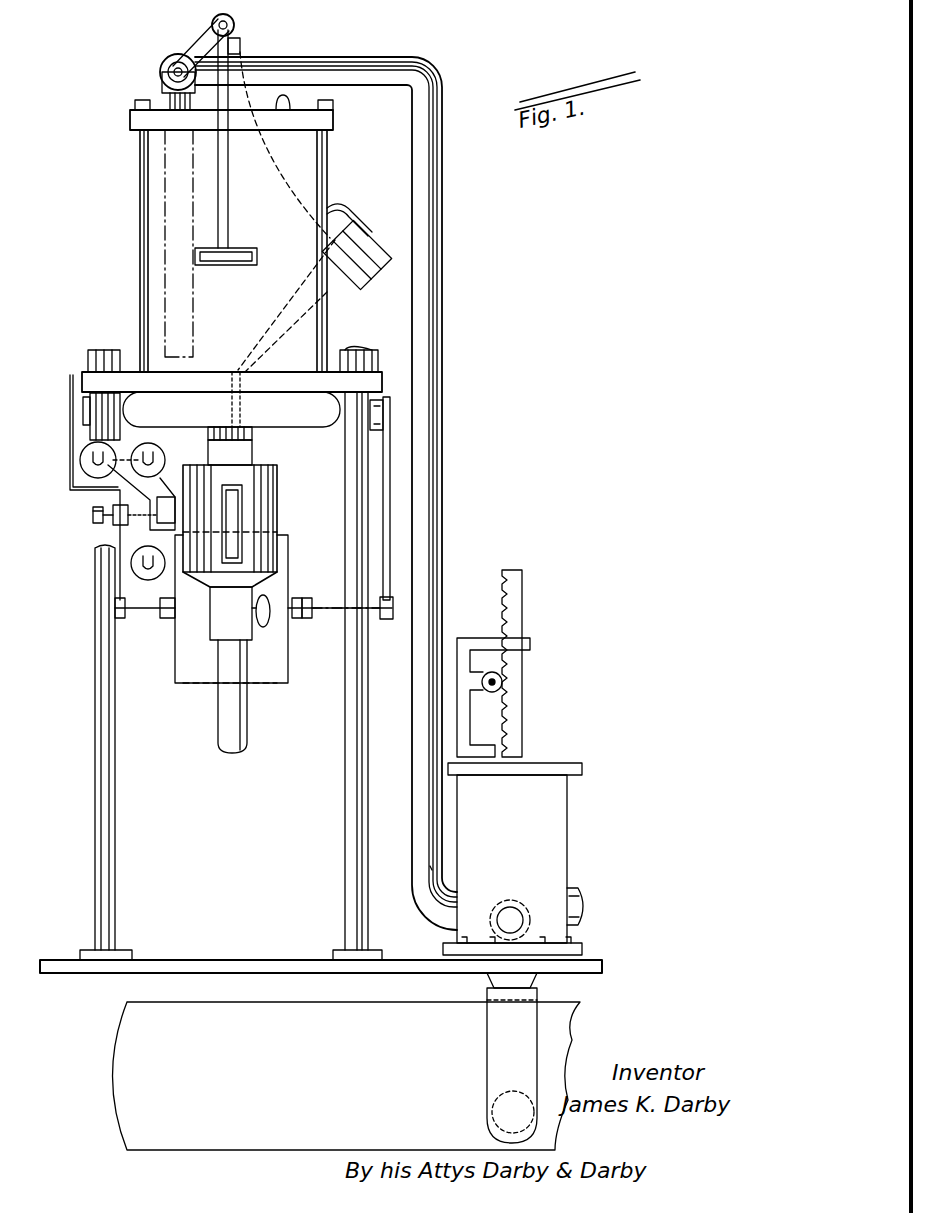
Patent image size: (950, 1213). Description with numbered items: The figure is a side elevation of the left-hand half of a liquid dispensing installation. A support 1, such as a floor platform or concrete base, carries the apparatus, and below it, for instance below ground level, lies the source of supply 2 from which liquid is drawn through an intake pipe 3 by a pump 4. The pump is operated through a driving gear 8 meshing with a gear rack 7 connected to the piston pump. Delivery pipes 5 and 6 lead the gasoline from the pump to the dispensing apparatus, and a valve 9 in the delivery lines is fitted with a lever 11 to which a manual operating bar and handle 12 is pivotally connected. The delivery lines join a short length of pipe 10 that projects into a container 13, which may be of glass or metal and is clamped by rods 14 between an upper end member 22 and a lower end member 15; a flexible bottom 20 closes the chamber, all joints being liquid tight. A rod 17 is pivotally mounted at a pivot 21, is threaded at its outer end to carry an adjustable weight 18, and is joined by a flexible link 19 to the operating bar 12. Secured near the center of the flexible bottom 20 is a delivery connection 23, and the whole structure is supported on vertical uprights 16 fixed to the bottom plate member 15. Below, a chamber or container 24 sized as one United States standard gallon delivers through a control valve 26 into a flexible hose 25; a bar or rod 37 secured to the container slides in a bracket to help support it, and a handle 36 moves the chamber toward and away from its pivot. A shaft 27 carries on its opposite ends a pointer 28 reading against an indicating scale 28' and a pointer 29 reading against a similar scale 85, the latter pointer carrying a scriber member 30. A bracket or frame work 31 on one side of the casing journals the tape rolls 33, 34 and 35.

The support 1 is at (97, 968).
The source of supply 2 is at (112, 1089).
The intake pipe 3 is at (487, 1049).
The pump 4 is at (567, 860).
The delivery pipe 5 is at (424, 869).
The delivery pipe 6 is at (587, 905).
The gear rack 7 is at (495, 708).
The driving gear 8 is at (489, 643).
The valve 9 is at (160, 74).
The short length of pipe 10 is at (165, 190).
The lever 11 is at (207, 40).
The manual operating bar and handle 12 is at (228, 207).
The container 13 is at (152, 249).
The rods 14 is at (142, 301).
The end member 15 is at (380, 374).
The vertical uprights 16 is at (113, 822).
The rod 17 is at (280, 318).
The weight 18 is at (352, 282).
The flexible link 19 is at (352, 210).
The flexible bottom 20 is at (340, 418).
The pivot 21 is at (232, 372).
The end member 22 is at (285, 97).
The delivery connection 23 is at (250, 446).
The chamber or container 24 is at (280, 507).
The flexible hose 25 is at (248, 736).
The control valve 26 is at (265, 628).
The shaft 27 is at (324, 605).
The pointer 28 is at (429, 498).
The indicating scale 28' is at (428, 415).
The pointer 29 is at (101, 521).
The scriber member 30 is at (100, 522).
The bracket or frame work 31 is at (70, 490).
The tape roll 33 is at (92, 461).
The tape roll 34 is at (160, 460).
The tape roll 35 is at (140, 618).
The handle 36 is at (245, 522).
The bar or rod 37 is at (147, 497).
The scale 85 is at (83, 412).